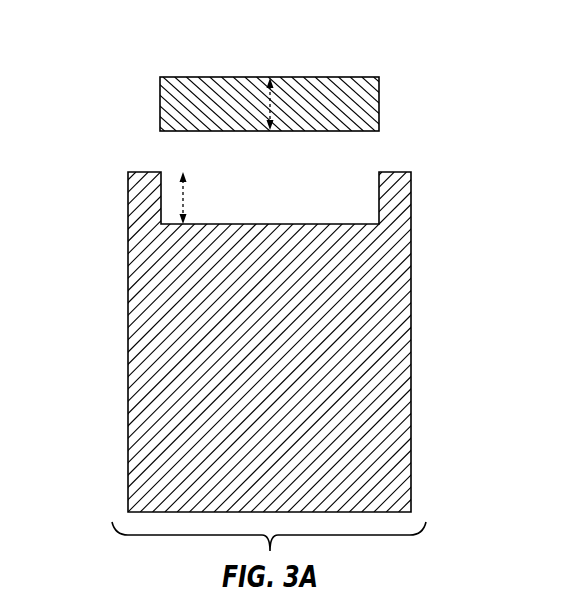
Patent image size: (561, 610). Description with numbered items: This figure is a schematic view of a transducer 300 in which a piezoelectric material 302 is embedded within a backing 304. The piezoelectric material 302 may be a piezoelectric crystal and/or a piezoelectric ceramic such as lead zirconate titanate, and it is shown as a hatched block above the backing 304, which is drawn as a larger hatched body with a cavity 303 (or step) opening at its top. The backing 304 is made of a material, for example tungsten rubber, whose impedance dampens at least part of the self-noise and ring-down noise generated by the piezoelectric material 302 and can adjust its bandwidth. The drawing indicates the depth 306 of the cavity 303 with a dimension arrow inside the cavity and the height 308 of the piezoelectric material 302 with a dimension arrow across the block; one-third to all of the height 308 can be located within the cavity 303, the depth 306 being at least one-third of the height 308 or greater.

The transducer 300 is at (389, 42).
The piezoelectric material 302 is at (160, 103).
The cavity 303 is at (357, 175).
The backing 304 is at (163, 343).
The depth 306 is at (186, 200).
The height 308 is at (273, 100).